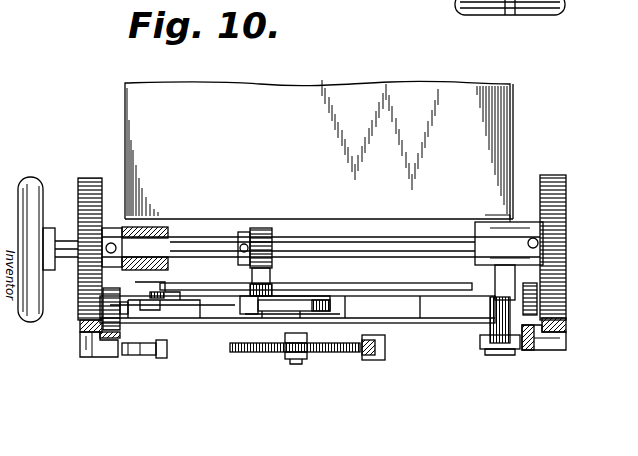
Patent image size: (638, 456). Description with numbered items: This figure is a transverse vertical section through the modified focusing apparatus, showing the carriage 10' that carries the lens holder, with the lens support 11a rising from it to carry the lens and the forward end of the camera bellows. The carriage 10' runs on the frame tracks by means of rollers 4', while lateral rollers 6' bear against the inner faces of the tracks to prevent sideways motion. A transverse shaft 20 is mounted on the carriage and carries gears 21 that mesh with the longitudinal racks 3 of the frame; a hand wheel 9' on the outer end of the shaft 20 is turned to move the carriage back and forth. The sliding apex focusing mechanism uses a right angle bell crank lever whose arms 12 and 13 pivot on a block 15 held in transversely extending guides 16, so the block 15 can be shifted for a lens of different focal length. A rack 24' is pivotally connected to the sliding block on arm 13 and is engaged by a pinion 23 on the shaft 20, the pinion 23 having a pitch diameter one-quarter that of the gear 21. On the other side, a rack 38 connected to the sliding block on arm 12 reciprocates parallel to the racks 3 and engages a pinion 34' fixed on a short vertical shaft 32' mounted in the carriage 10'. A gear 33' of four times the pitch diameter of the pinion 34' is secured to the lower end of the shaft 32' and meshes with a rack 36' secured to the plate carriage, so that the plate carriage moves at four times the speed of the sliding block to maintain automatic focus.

The longitudinal rack 3 is at (566, 318).
The roller 4' is at (542, 301).
The lateral roller 6' is at (148, 362).
The hand wheel 9' is at (48, 232).
The carriage 10' is at (297, 313).
The lens support 11a is at (490, 163).
The lever arm 12 is at (396, 290).
The lever arm 13 is at (205, 292).
The block 15 is at (165, 304).
The transversely extending guide 16 is at (182, 315).
The transverse shaft 20 is at (396, 230).
The gear 21 is at (560, 192).
The pinion 23 is at (266, 228).
The rack 24' is at (285, 279).
The short vertical shaft 32' is at (308, 355).
The gear 33' is at (363, 359).
The pinion 34' is at (302, 288).
The rack 36' is at (328, 348).
The rack 38 is at (280, 312).